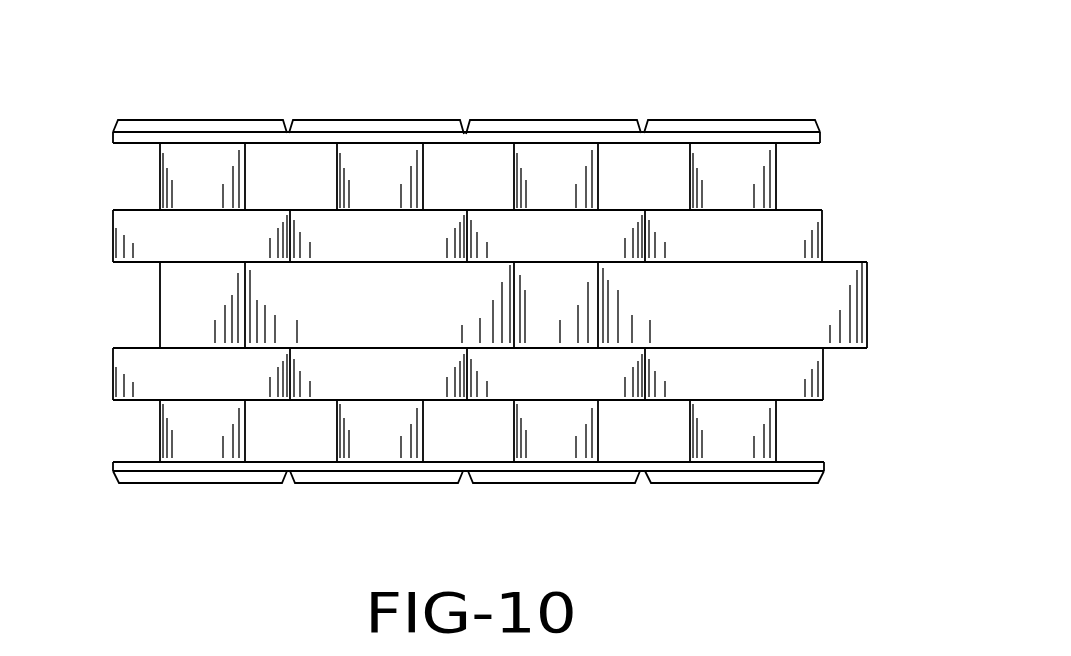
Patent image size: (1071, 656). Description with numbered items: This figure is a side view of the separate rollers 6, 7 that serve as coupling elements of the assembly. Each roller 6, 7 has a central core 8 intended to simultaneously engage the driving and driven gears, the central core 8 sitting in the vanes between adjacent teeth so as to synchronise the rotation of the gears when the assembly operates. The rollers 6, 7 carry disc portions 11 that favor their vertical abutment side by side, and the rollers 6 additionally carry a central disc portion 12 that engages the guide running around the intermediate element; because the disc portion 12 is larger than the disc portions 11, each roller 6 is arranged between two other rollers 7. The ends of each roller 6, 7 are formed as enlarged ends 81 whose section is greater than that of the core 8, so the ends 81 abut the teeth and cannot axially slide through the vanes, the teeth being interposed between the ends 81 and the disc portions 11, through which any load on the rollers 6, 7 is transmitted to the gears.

The roller 6 is at (385, 120).
The roller 7 is at (591, 118).
The central core 8 is at (738, 185).
The disc portion 11 is at (417, 242).
The central disc portion 12 is at (823, 303).
The enlarged end 81 is at (157, 120).